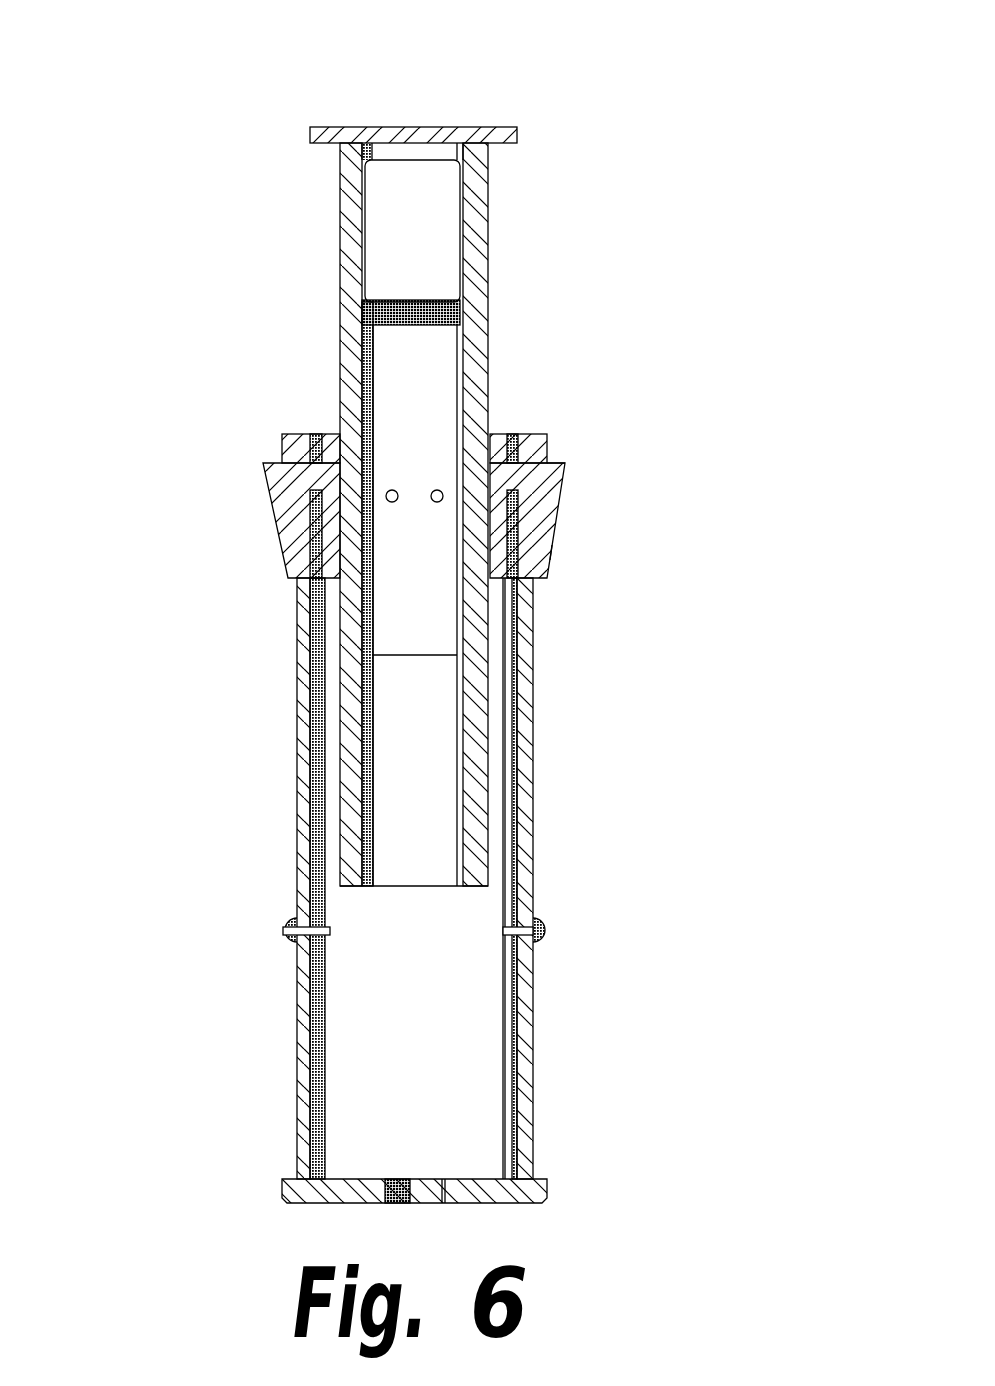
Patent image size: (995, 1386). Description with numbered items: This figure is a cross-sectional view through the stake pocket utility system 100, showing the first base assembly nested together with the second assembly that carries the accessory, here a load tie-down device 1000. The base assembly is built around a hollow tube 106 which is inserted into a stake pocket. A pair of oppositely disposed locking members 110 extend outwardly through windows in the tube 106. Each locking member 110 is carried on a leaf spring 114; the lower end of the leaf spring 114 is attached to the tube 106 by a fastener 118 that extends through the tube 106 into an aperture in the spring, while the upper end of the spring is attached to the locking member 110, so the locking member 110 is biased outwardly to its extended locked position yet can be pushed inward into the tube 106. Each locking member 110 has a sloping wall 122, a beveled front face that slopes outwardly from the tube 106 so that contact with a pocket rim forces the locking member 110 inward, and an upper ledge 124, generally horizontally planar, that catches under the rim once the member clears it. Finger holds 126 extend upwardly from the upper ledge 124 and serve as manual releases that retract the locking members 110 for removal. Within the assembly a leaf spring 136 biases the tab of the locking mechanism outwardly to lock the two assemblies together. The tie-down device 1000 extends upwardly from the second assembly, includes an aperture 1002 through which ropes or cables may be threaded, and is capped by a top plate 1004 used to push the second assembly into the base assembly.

The load tie-down device 1000 is at (540, 165).
The stake pocket utility system 100 is at (678, 276).
The top plate 1004 is at (375, 127).
The aperture 1002 is at (380, 228).
The leaf spring 136 is at (392, 617).
The finger hold 126 is at (497, 435).
The locking member 110 is at (285, 490).
The upper ledge 124 is at (552, 463).
The sloping wall 122 is at (560, 562).
The hollow tube 106 is at (523, 815).
The leaf spring 114 is at (523, 725).
The fastener 118 is at (283, 930).